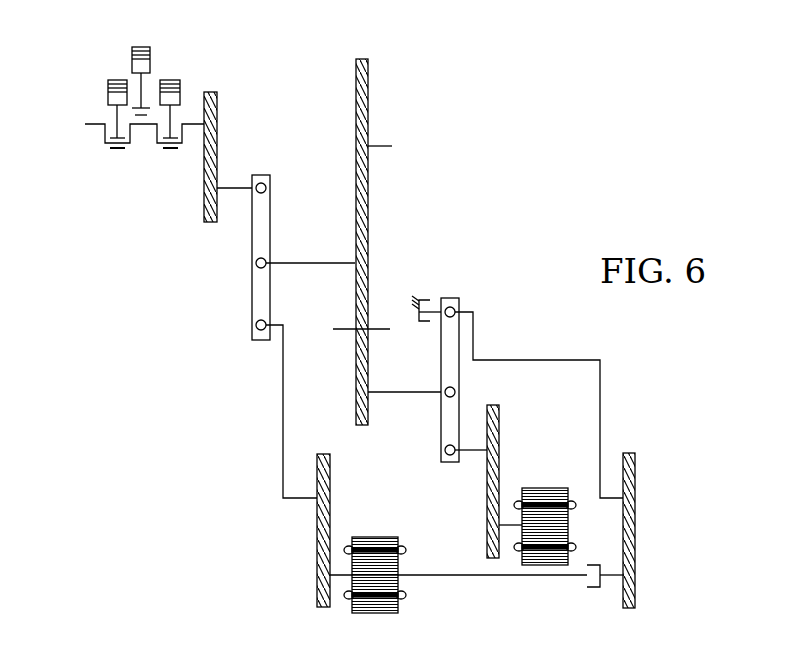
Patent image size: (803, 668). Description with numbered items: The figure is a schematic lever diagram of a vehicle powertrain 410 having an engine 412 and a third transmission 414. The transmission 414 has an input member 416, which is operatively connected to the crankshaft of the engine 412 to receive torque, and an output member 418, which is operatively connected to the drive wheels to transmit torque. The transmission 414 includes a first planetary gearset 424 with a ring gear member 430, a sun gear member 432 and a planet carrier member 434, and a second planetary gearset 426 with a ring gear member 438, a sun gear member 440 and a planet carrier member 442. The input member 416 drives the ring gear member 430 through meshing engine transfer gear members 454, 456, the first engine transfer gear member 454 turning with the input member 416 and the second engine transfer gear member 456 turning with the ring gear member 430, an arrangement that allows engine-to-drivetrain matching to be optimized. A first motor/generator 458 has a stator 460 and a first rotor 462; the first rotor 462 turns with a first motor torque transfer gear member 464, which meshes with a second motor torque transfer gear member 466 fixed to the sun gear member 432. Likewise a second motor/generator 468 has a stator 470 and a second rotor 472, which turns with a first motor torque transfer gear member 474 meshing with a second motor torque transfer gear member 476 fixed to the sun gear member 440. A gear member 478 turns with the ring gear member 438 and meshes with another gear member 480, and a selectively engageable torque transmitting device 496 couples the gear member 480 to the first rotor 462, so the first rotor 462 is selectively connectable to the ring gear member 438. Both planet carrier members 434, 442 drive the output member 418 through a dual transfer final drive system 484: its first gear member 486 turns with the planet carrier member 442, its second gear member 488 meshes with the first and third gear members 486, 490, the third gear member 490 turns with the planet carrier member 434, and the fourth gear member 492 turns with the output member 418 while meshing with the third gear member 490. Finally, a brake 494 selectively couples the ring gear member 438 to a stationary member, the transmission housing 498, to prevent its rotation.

The vehicle powertrain 410 is at (498, 103).
The engine 412 is at (108, 92).
The transmission 414 is at (472, 215).
The input member 416 is at (188, 123).
The output member 418 is at (386, 146).
The first planetary gearset 424 is at (252, 303).
The second planetary gearset 426 is at (440, 392).
The ring gear member 430 is at (266, 175).
The sun gear member 432 is at (256, 328).
The planet carrier member 434 is at (255, 263).
The ring gear member 438 is at (456, 300).
The sun gear member 440 is at (441, 450).
The planet carrier member 442 is at (460, 392).
The first engine transfer gear member 454 is at (218, 125).
The second engine transfer gear member 456 is at (204, 190).
The first motor/generator 458 is at (365, 530).
The stator 460 is at (400, 598).
The first rotor 462 is at (343, 578).
The first motor torque transfer gear member 464 is at (315, 578).
The second motor torque transfer gear member 466 is at (330, 498).
The second motor/generator 468 is at (543, 480).
The stator 470 is at (545, 567).
The second rotor 472 is at (512, 527).
The first motor torque transfer gear member 474 is at (487, 527).
The second motor torque transfer gear member 476 is at (499, 445).
The gear member 478 is at (636, 497).
The gear member 480 is at (636, 575).
The dual transfer final drive system 484 is at (401, 66).
The first gear member 486 is at (355, 380).
The second gear member 488 is at (368, 318).
The third gear member 490 is at (368, 262).
The fourth gear member 492 is at (356, 112).
The brake 494 is at (428, 288).
The torque transmitting device 496 is at (592, 595).
The transmission housing 498 is at (415, 318).